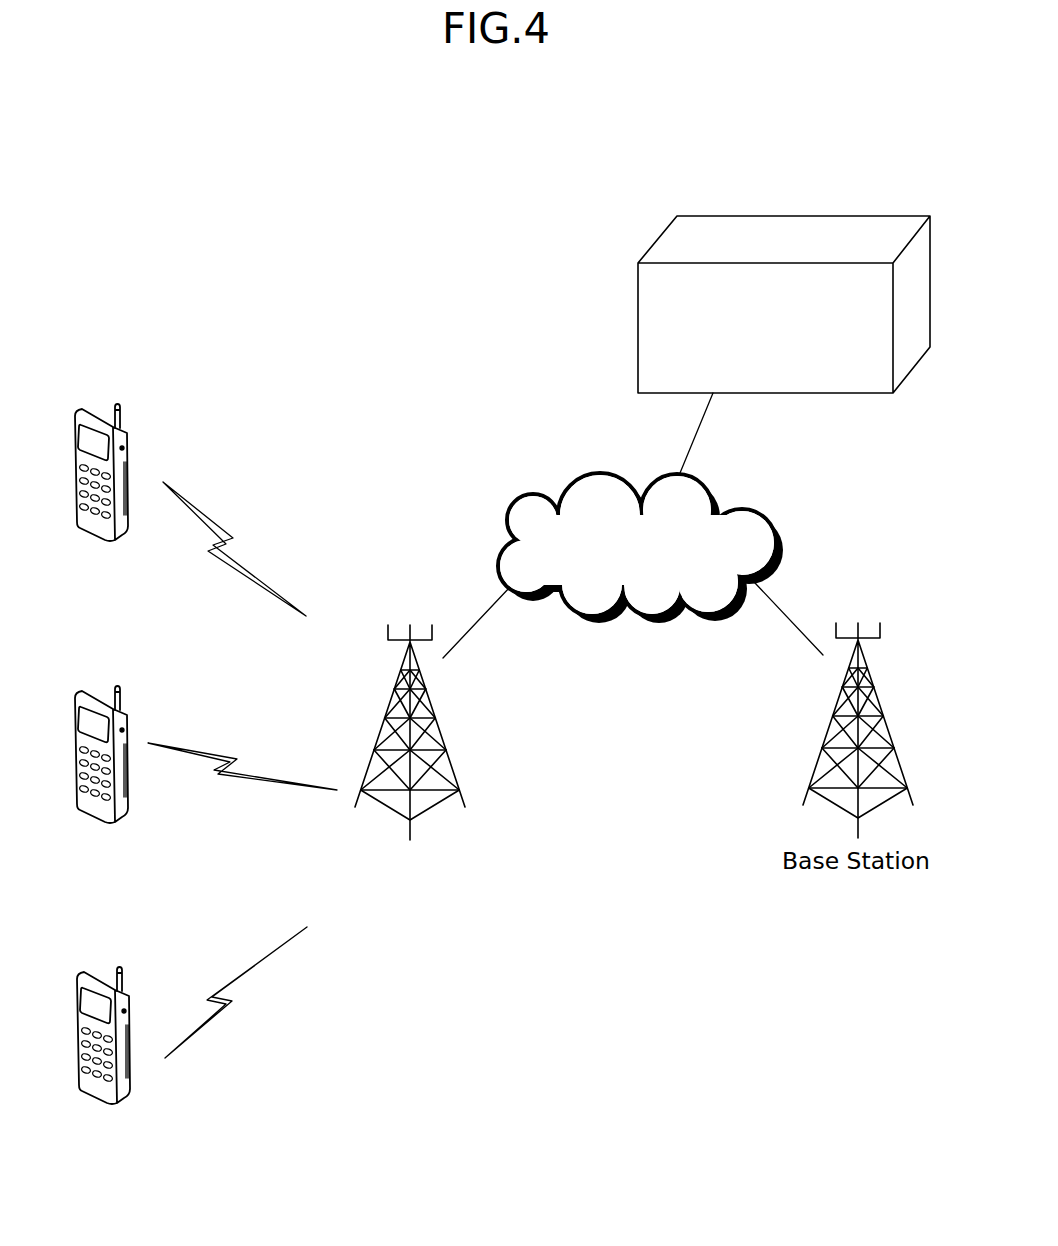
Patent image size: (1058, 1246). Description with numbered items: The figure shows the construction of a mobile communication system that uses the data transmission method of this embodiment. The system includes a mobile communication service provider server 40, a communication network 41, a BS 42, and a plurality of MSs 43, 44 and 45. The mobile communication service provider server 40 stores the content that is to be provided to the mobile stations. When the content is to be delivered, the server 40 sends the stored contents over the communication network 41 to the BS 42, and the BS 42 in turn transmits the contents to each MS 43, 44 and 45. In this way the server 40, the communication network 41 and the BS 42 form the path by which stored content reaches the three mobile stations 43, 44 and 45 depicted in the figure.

The mobile communication service provider server 40 is at (638, 327).
The communication network 41 is at (578, 482).
The BS 42 is at (447, 752).
The MS 43 is at (132, 425).
The MS 44 is at (132, 710).
The MS 45 is at (134, 992).